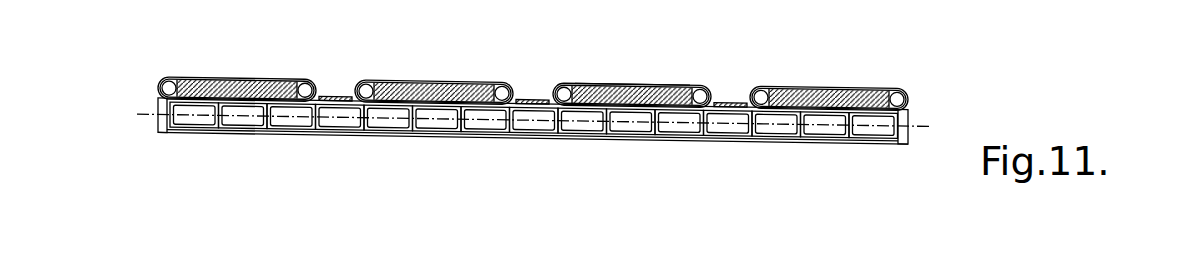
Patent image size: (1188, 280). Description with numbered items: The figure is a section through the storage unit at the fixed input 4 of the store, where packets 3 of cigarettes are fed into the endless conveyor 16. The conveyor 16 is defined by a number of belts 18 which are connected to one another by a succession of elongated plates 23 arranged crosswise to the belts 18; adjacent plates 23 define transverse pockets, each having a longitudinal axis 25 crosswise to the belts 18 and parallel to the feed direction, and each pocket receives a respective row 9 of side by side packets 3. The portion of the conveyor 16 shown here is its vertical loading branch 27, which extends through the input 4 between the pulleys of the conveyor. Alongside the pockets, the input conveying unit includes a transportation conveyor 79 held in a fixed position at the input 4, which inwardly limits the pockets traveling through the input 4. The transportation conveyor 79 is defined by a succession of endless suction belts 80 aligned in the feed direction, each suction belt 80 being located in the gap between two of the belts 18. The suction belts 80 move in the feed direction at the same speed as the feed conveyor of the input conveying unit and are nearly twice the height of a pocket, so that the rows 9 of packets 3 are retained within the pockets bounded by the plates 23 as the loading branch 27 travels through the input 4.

The packet 3 is at (867, 128).
The fixed input 4 is at (913, 110).
The row 9 is at (772, 140).
The endless conveyor 16 is at (450, 144).
The belt 18 is at (333, 97).
The elongated plate 23 is at (162, 120).
The longitudinal axis 25 is at (922, 122).
The loading branch 27 is at (593, 144).
The transportation conveyor 79 is at (618, 81).
The endless suction belt 80 is at (248, 78).